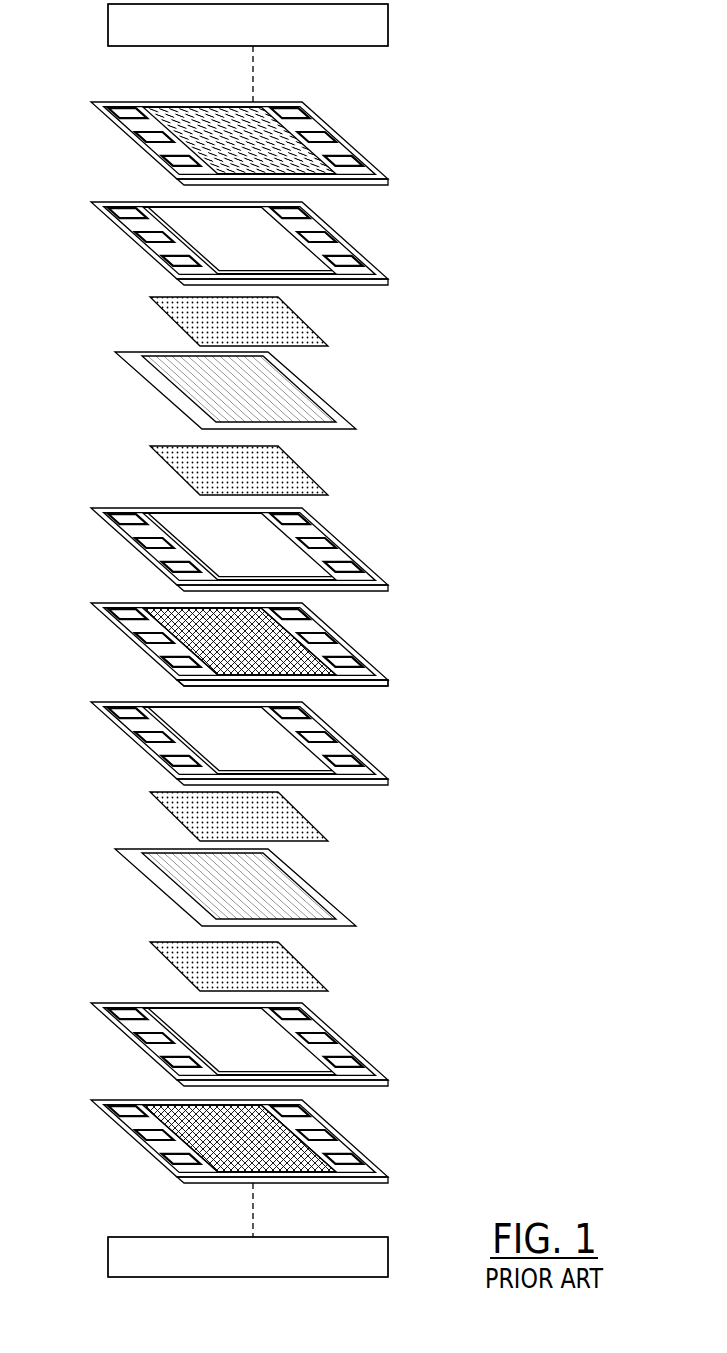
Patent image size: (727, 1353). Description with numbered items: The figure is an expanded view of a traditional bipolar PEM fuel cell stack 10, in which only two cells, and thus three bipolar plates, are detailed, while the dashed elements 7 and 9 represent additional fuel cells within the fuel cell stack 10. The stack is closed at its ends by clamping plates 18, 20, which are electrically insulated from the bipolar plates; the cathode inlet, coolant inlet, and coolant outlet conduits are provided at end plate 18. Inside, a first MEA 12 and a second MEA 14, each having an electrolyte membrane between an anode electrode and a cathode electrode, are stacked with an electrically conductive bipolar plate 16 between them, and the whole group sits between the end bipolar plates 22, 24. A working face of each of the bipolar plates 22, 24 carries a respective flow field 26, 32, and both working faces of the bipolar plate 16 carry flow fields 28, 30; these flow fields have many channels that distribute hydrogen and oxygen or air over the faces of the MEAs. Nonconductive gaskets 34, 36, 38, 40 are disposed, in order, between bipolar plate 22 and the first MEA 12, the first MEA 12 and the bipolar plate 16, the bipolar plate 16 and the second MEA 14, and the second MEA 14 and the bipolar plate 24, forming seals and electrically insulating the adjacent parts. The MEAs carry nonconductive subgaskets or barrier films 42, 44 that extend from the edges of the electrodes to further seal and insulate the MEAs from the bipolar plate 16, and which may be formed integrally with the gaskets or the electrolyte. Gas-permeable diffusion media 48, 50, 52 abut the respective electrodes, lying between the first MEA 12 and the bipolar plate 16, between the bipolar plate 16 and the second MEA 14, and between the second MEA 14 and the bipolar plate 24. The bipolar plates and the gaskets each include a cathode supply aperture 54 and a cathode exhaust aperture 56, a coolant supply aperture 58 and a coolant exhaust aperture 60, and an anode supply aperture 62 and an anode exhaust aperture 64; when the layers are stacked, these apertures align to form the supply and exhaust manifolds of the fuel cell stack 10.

The fuel cell stack 10 is at (522, 342).
The clamping plate 18 is at (388, 27).
The additional fuel cells 7 is at (256, 82).
The bipolar plate 22 is at (104, 140).
The flow field 26 is at (142, 154).
The nonconductive gasket 34 is at (148, 213).
The nonconductive gasket 40 is at (182, 309).
The subgasket 42 is at (115, 355).
The first MEA 12 is at (160, 394).
The diffusion medium 48 is at (180, 464).
The nonconductive gasket 36 is at (135, 542).
The bipolar plate 16 is at (90, 618).
The cathode supply aperture 54 is at (120, 612).
The coolant exhaust aperture 60 is at (143, 652).
The flow field 30 is at (152, 668).
The anode exhaust aperture 64 is at (178, 672).
The flow field 28 is at (240, 632).
The anode supply aperture 62 is at (312, 621).
The coolant supply aperture 58 is at (343, 642).
The cathode exhaust aperture 56 is at (370, 663).
The nonconductive gasket 38 is at (335, 764).
The diffusion medium 50 is at (293, 818).
The subgasket 44 is at (157, 886).
The second MEA 14 is at (345, 890).
The diffusion medium 52 is at (293, 971).
The bipolar plate 24 is at (345, 1120).
The flow field 32 is at (330, 1161).
The additional fuel cells 9 is at (256, 1226).
The clamping plate 20 is at (388, 1252).